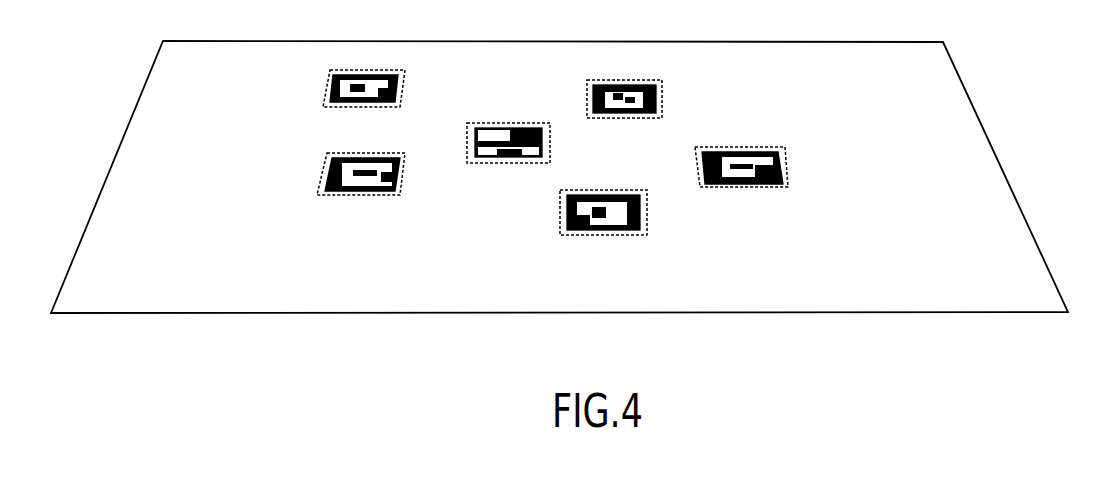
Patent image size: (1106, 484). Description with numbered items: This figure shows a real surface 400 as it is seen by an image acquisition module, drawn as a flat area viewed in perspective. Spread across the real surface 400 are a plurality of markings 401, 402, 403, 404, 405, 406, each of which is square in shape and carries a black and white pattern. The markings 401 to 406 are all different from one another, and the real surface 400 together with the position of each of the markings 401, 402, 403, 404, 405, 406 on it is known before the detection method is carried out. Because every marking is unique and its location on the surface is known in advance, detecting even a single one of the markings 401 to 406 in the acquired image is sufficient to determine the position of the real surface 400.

The real surface 400 is at (740, 62).
The marking 401 is at (365, 68).
The marking 402 is at (499, 125).
The marking 403 is at (628, 80).
The marking 404 is at (350, 192).
The marking 405 is at (605, 231).
The marking 406 is at (742, 185).